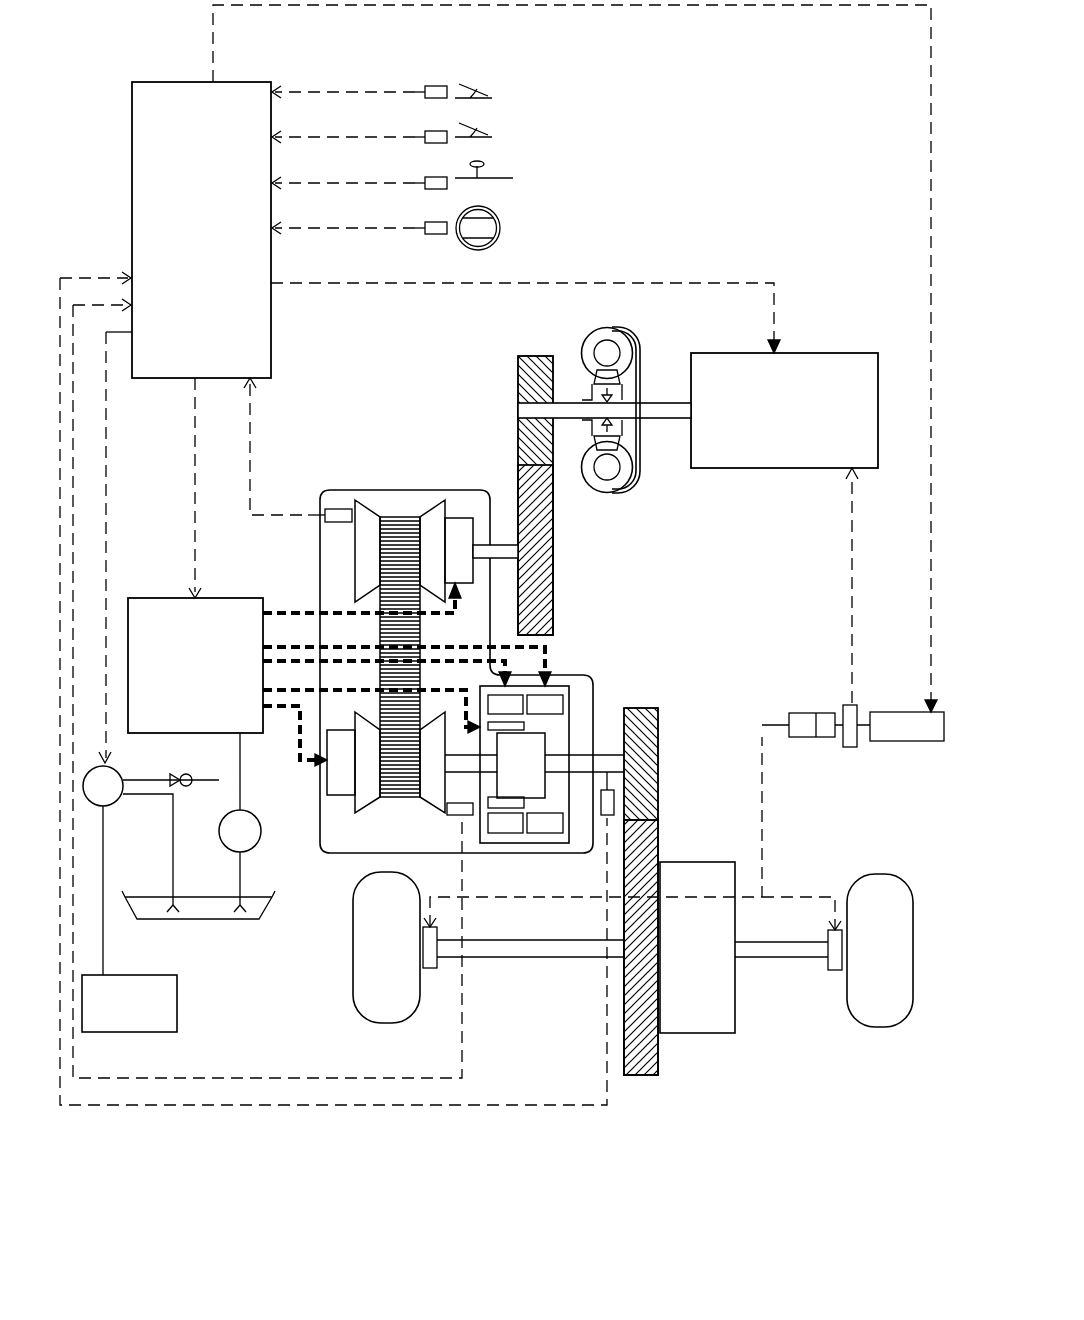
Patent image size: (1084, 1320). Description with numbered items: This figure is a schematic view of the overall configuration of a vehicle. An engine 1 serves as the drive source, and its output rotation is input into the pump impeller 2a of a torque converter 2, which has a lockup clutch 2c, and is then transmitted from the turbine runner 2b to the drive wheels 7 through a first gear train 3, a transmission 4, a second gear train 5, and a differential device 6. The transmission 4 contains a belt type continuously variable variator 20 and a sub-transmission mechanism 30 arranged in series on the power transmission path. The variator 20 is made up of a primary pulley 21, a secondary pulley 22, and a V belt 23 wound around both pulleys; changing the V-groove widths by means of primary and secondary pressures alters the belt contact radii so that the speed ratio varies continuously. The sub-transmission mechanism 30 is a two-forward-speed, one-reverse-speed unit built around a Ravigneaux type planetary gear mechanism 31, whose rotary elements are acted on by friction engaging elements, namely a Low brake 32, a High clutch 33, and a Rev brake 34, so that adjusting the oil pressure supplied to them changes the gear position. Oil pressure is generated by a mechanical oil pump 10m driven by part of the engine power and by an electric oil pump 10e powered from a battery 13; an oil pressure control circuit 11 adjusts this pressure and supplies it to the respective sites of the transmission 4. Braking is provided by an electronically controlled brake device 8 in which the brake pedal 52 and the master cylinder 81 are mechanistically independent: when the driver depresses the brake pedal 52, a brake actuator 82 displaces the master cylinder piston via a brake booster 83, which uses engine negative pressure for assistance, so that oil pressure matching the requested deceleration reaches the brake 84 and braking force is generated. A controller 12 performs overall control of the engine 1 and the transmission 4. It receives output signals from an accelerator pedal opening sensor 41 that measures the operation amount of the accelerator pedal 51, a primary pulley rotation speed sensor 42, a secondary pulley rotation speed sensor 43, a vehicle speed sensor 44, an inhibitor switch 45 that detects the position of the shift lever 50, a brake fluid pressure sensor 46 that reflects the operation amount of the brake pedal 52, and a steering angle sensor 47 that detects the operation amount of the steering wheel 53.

The engine 1 is at (812, 356).
The torque converter 2 is at (629, 388).
The pump impeller 2a is at (588, 340).
The turbine runner 2b is at (612, 492).
The lockup clutch 2c is at (636, 438).
The first gear train 3 is at (525, 342).
The transmission 4 is at (478, 490).
The second gear train 5 is at (643, 1085).
The differential device 6 is at (700, 1022).
The drive wheels 7 is at (386, 1010).
The brake device 8 is at (683, 846).
The electric oil pump 10e is at (108, 806).
The mechanical oil pump 10m is at (234, 850).
The oil pressure control circuit 11 is at (150, 606).
The controller 12 is at (256, 92).
The battery 13 is at (170, 1022).
The variator 20 is at (394, 669).
The primary pulley 21 is at (348, 547).
The secondary pulley 22 is at (388, 810).
The V belt 23 is at (414, 515).
The sub-transmission mechanism 30 is at (579, 742).
The planetary gear mechanism 31 is at (523, 760).
The Low brake 32 is at (508, 705).
The High clutch 33 is at (508, 800).
The Rev brake 34 is at (545, 705).
The accelerator pedal opening sensor 41 is at (432, 133).
The primary pulley rotation speed sensor 42 is at (336, 507).
The secondary pulley rotation speed sensor 43 is at (456, 818).
The vehicle speed sensor 44 is at (610, 788).
The inhibitor switch 45 is at (432, 180).
The brake fluid pressure sensor 46 is at (436, 86).
The steering angle sensor 47 is at (438, 235).
The shift lever 50 is at (483, 165).
The accelerator pedal 51 is at (484, 132).
The brake pedal 52 is at (478, 80).
The steering wheel 53 is at (500, 226).
The master cylinder 81 is at (802, 712).
The brake actuator 82 is at (902, 742).
The brake booster 83 is at (850, 748).
The brake 84 is at (430, 970).